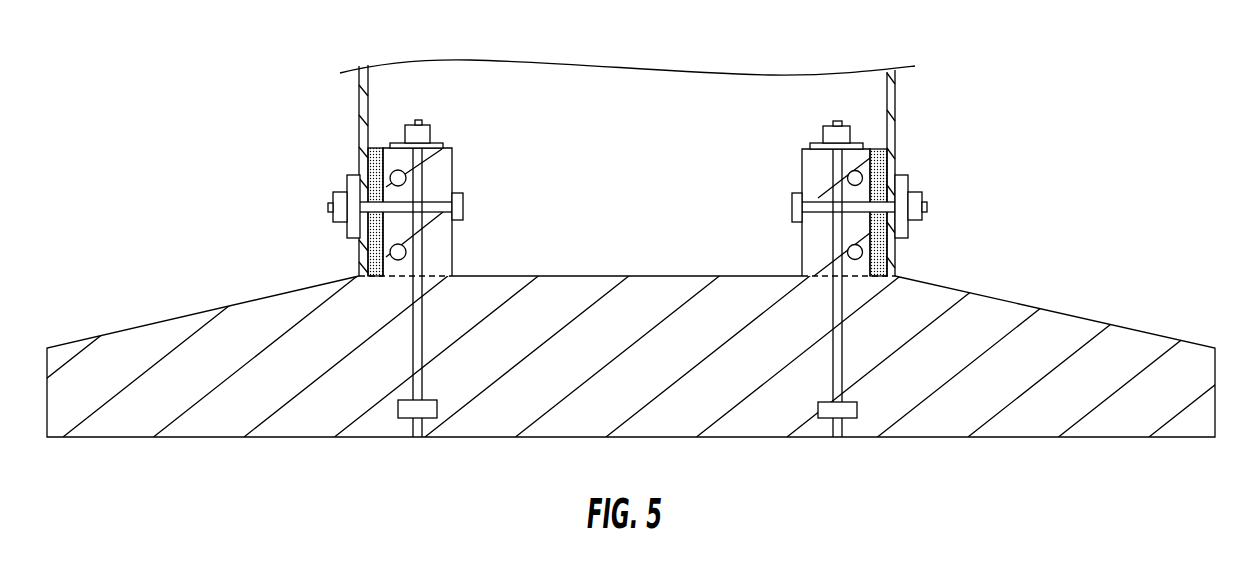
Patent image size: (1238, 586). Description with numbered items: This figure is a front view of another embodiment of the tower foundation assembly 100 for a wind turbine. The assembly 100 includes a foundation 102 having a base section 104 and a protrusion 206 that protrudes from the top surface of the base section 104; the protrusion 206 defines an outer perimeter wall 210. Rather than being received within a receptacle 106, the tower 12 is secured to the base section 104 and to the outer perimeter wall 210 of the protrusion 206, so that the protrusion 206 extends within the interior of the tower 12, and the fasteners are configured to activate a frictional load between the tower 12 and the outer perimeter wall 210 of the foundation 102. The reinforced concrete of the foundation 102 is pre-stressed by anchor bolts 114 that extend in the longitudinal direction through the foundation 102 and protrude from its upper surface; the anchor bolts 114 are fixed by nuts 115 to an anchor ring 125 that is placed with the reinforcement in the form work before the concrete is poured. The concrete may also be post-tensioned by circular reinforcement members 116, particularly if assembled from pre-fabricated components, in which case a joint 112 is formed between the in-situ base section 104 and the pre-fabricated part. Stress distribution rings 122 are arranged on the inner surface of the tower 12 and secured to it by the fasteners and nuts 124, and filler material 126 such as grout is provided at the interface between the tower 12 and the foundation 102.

The tower foundation assembly 100 is at (170, 80).
The tower 12 is at (900, 98).
The foundation 102 is at (339, 322).
The base section 104 is at (197, 317).
The receptacle 106 is at (406, 178).
The joint 112 is at (403, 278).
The anchor bolts 114 is at (434, 342).
The nuts 115 is at (432, 130).
The circular reinforcement members 116 is at (848, 252).
The stress distribution rings 122 is at (343, 180).
The nuts 124 is at (335, 228).
The anchor ring 125 is at (872, 422).
The filler material 126 is at (375, 280).
The protrusion 206 is at (597, 275).
The outer perimeter wall 210 is at (406, 250).